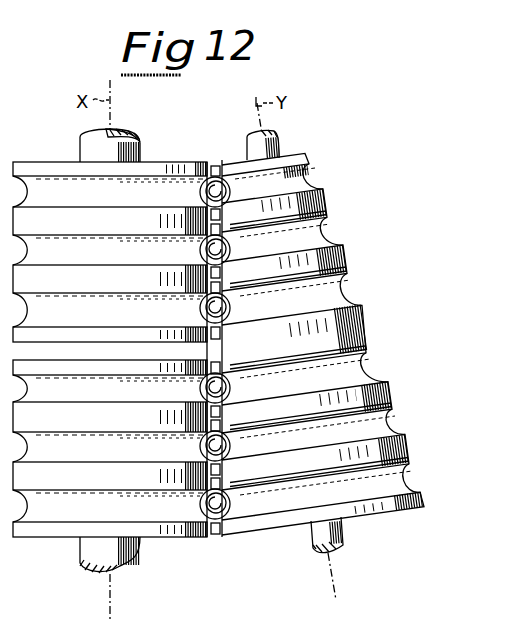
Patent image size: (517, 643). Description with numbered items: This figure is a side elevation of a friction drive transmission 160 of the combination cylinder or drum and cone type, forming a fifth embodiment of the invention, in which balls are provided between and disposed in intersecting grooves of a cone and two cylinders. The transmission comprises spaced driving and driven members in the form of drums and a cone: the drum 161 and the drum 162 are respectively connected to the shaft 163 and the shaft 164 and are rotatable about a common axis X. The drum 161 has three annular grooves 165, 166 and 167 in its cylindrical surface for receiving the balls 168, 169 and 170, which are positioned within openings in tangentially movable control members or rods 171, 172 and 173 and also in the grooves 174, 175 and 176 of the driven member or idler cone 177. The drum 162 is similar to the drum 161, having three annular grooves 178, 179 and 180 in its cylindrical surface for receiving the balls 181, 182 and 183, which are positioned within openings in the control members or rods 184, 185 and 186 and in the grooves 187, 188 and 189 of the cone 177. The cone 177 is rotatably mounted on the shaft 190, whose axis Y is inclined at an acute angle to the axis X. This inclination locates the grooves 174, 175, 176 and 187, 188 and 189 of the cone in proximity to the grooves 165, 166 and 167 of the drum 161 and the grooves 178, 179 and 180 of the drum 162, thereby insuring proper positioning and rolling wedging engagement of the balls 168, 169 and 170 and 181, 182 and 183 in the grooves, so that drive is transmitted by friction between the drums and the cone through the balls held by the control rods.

The transmission 160 is at (39, 158).
The drum 161 is at (154, 161).
The drum 162 is at (29, 539).
The shaft 163 is at (129, 133).
The shaft 164 is at (80, 556).
The annular groove 165 is at (80, 205).
The annular groove 166 is at (80, 263).
The annular groove 167 is at (80, 321).
The ball 168 is at (204, 192).
The ball 169 is at (204, 250).
The ball 170 is at (204, 308).
The control member or rod 171 is at (215, 163).
The control member or rod 172 is at (220, 233).
The control member or rod 173 is at (220, 331).
The groove 174 is at (304, 181).
The groove 175 is at (322, 239).
The groove 176 is at (344, 293).
The idler cone 177 is at (292, 154).
The annular groove 178 is at (80, 403).
The annular groove 179 is at (80, 461).
The annular groove 180 is at (80, 519).
The ball 181 is at (204, 389).
The ball 182 is at (204, 447).
The ball 183 is at (204, 505).
The control member or rod 184 is at (220, 370).
The control member or rod 185 is at (221, 427).
The control member or rod 186 is at (222, 484).
The groove 187 is at (367, 369).
The groove 188 is at (386, 423).
The groove 189 is at (402, 475).
The shaft 190 is at (310, 537).